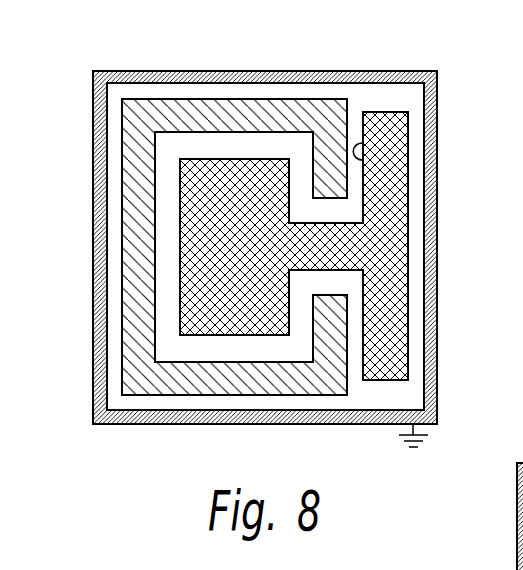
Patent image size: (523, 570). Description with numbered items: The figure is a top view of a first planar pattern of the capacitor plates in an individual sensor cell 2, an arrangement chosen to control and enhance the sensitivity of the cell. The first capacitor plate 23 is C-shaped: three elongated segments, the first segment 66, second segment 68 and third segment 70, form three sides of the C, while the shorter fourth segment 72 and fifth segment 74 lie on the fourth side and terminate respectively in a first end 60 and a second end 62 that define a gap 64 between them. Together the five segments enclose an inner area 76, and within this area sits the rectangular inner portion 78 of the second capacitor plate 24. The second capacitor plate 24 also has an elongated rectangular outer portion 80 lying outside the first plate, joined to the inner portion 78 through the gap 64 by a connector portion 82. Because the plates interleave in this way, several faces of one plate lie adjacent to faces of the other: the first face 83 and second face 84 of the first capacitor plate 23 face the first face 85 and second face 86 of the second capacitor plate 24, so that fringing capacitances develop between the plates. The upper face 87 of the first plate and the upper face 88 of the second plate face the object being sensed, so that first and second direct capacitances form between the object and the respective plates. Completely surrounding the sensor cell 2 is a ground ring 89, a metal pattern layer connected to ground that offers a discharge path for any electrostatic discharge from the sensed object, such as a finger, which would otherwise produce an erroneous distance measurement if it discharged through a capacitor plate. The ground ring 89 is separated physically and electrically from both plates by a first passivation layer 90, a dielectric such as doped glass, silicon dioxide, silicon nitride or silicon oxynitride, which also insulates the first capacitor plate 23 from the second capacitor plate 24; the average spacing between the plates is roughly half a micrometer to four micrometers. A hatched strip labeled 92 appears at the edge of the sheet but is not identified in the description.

The sensor cell 2 is at (79, 64).
The first capacitor plate 23 is at (238, 88).
The second capacitor plate 24 is at (396, 104).
The first end 60 is at (358, 200).
The second end 62 is at (335, 295).
The gap 64 is at (310, 297).
The first segment 66 is at (168, 104).
The second segment 68 is at (120, 273).
The third segment 70 is at (188, 383).
The fourth segment 72 is at (313, 150).
The fifth segment 74 is at (348, 327).
The inner area 76 is at (168, 348).
The inner portion 78 is at (180, 223).
The outer portion 80 is at (422, 217).
The connector portion 82 is at (313, 222).
The first face 83 is at (232, 130).
The second face 84 is at (363, 155).
The first face 85 is at (208, 158).
The second face 86 is at (347, 127).
The upper face 87 is at (138, 150).
The upper face 88 is at (410, 238).
The ground ring 89 is at (140, 71).
The first passivation layer 90 is at (357, 100).
The substrate 92 is at (518, 540).